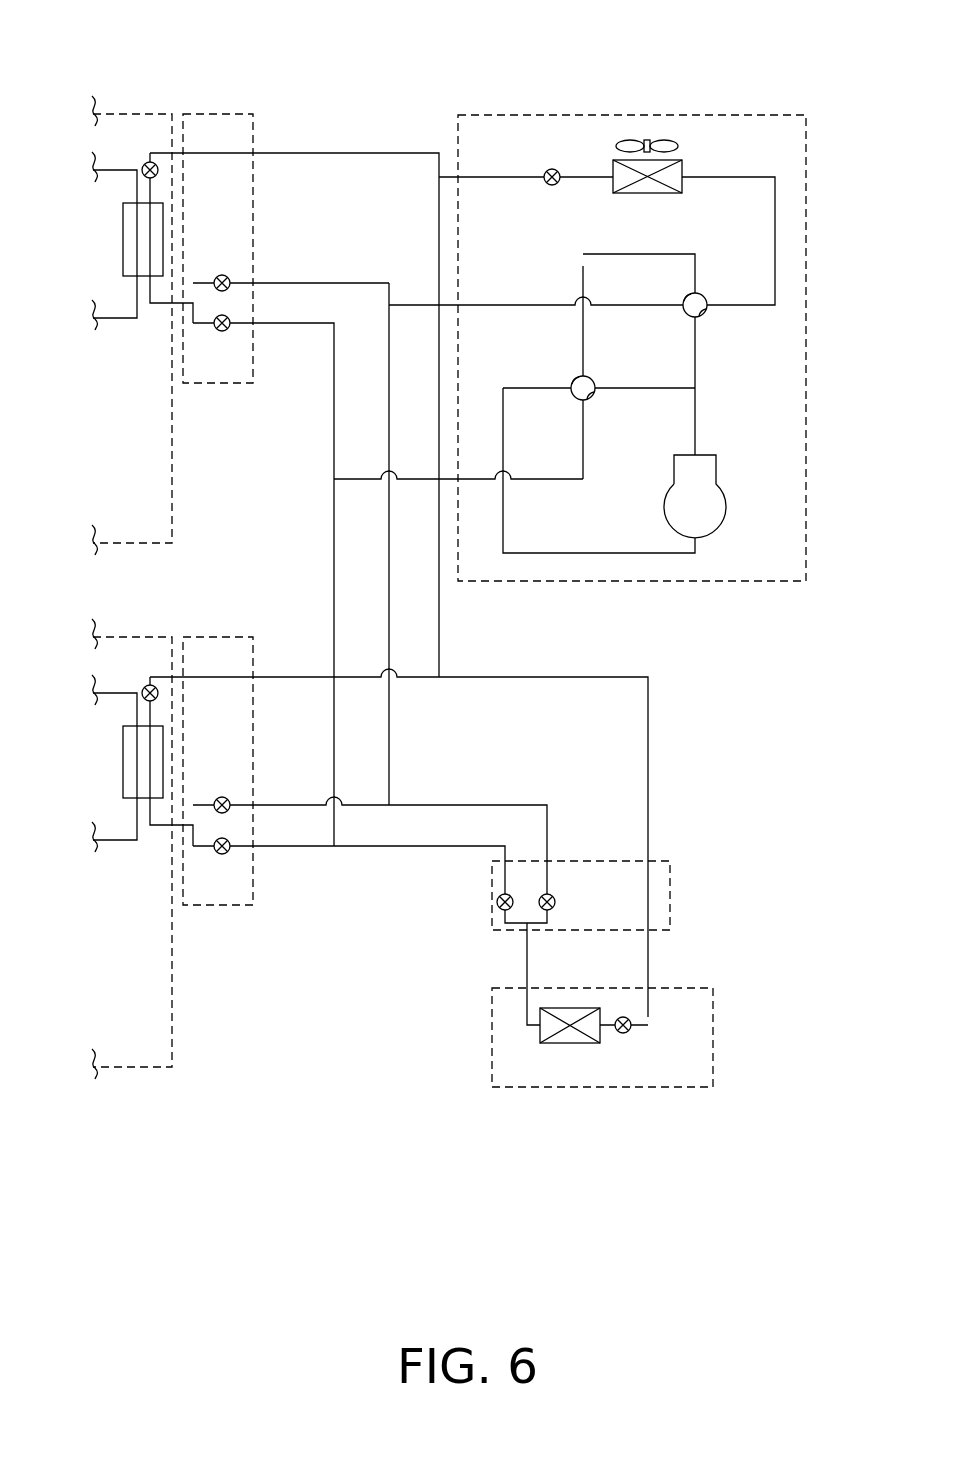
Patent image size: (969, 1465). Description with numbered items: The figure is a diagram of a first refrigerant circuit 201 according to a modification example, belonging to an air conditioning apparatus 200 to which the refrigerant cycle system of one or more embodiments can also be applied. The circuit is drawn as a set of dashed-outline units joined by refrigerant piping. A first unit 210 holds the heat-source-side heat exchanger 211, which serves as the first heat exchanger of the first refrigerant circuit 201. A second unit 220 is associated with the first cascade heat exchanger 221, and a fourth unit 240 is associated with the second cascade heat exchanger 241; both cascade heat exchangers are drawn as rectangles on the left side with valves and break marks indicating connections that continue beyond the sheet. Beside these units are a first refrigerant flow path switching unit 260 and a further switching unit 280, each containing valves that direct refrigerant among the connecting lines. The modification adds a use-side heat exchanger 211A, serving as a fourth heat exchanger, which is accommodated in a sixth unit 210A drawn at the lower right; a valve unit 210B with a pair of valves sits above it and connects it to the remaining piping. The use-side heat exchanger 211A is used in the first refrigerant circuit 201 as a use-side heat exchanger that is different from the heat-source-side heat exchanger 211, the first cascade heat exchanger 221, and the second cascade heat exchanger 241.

The air conditioning apparatus 200 is at (698, 1205).
The first refrigerant circuit 201 is at (718, 56).
The first unit 210 is at (632, 581).
The sixth unit 210A is at (603, 1087).
The valve unit 210B is at (670, 893).
The heat-source-side heat exchanger 211 is at (647, 194).
The use-side heat exchanger 211A is at (597, 1043).
The second unit 220 is at (137, 543).
The first cascade heat exchanger 221 is at (163, 228).
The fourth unit 240 is at (137, 1067).
The second cascade heat exchanger 241 is at (163, 760).
The first refrigerant flow path switching unit 260 is at (218, 383).
The second branch unit 280 is at (218, 905).